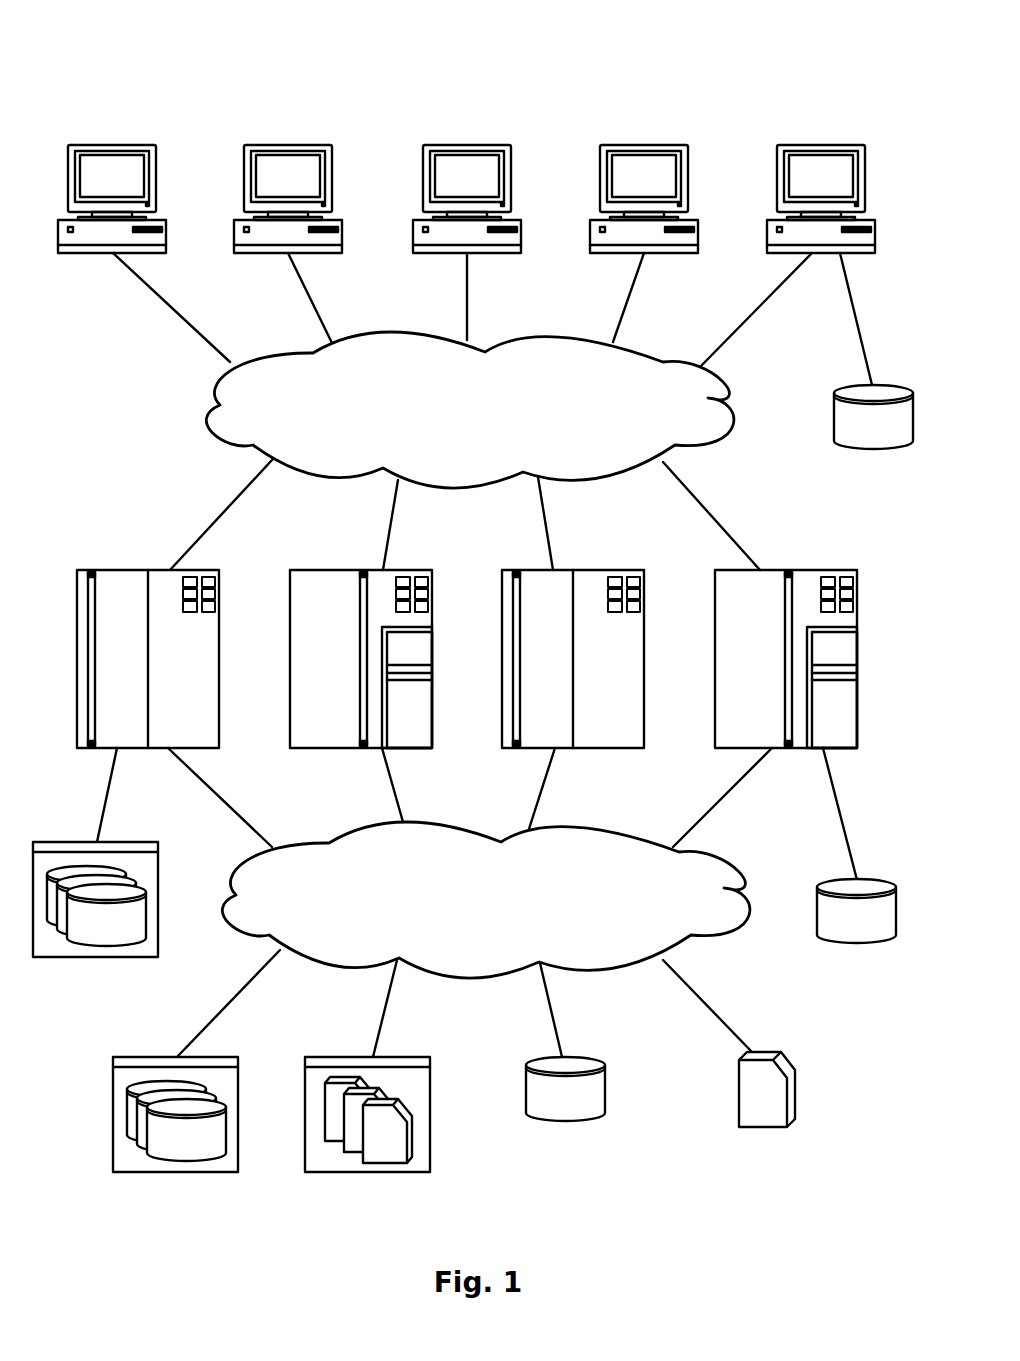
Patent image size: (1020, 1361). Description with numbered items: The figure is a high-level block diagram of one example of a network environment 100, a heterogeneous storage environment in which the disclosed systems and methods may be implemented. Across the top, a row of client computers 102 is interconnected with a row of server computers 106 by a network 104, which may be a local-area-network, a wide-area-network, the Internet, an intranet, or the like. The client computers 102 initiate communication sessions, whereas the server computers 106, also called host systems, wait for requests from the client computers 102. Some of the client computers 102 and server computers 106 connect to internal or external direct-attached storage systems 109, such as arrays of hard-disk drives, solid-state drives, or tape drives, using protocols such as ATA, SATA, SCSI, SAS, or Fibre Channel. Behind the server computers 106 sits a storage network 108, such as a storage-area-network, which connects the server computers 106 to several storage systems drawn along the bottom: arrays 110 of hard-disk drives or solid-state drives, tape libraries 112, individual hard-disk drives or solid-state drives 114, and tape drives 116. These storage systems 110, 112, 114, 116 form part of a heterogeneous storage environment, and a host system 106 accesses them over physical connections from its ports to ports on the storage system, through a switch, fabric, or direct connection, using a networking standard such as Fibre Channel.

The network environment 100 is at (186, 72).
The client computers 102 is at (466, 199).
The network 104 is at (449, 436).
The server computers 106 is at (467, 659).
The storage network 108 is at (466, 924).
The direct-attached storage systems 109 is at (873, 449).
The arrays of hard-disk drives or solid-state drives 110 is at (177, 1172).
The tape libraries 112 is at (368, 1172).
The individual hard-disk drives or solid-state drives 114 is at (563, 1120).
The tape drives 116 is at (763, 1127).